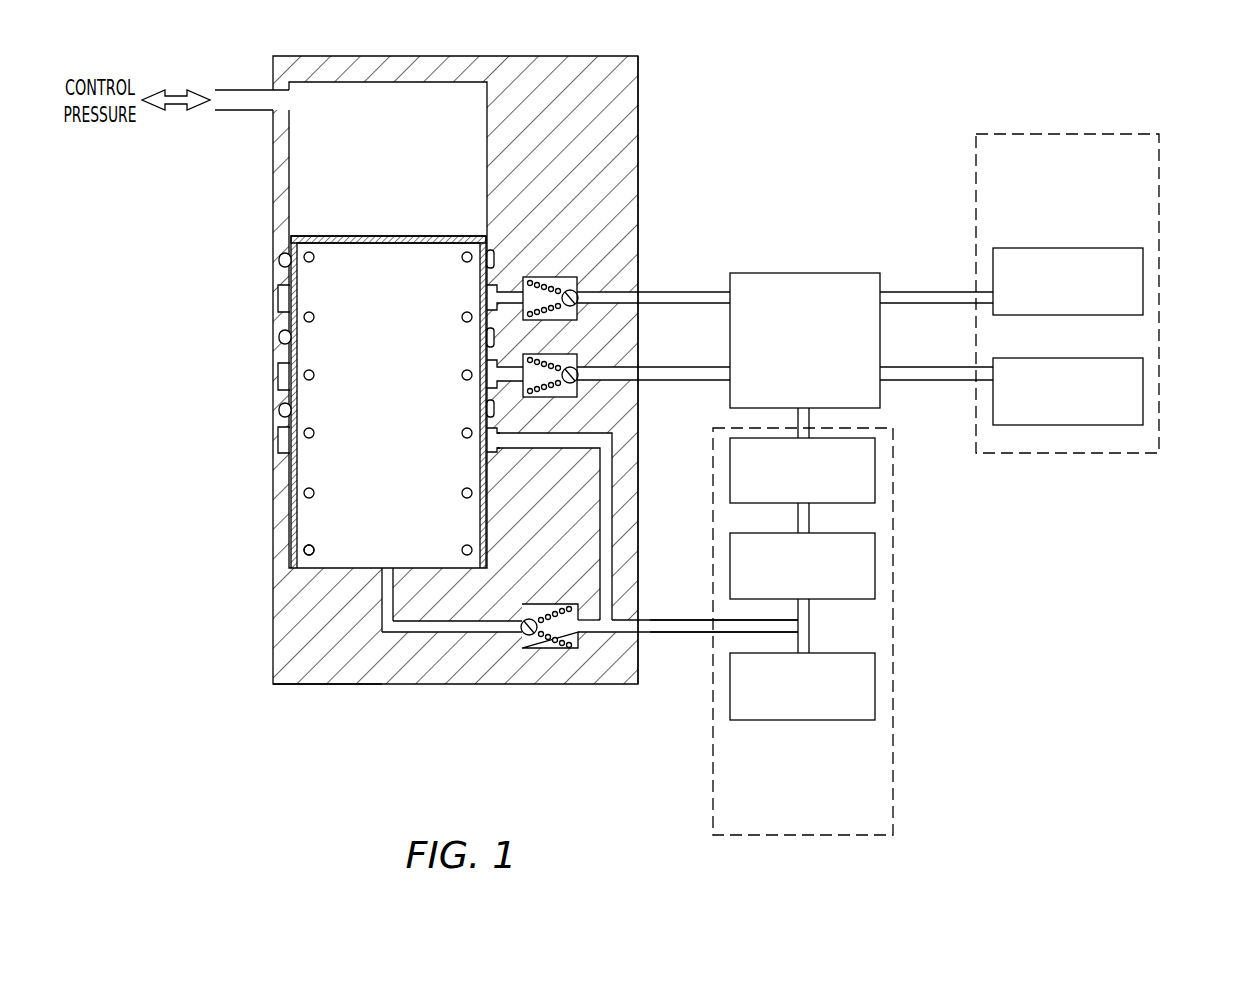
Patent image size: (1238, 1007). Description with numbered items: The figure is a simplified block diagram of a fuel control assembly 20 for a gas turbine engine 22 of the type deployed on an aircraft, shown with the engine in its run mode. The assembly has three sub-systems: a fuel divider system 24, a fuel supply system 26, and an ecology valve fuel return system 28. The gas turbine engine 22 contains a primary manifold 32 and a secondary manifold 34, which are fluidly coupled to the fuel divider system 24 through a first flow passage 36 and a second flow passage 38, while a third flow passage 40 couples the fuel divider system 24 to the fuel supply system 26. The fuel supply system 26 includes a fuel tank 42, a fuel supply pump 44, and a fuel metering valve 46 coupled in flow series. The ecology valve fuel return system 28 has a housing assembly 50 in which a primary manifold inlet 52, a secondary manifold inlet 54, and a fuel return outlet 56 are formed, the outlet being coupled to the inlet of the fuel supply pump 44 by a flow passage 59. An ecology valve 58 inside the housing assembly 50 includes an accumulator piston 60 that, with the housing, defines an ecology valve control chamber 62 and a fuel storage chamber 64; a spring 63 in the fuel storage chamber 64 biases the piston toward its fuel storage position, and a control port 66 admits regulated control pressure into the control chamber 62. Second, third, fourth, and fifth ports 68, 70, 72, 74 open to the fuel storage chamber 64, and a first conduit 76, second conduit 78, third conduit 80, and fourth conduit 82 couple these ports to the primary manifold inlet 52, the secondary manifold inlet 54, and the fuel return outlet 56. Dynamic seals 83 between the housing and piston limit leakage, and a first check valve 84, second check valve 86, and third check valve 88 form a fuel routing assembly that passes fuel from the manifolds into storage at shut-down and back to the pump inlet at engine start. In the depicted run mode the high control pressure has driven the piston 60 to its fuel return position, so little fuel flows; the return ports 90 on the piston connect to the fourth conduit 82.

The fuel control assembly 20 is at (893, 112).
The gas turbine engine 22 is at (1159, 166).
The fuel divider system 24 is at (800, 273).
The fuel supply system 26 is at (893, 777).
The ecology valve fuel return system 28 is at (668, 82).
The primary manifold 32 is at (1143, 281).
The secondary manifold 34 is at (1143, 390).
The first flow passage 36 is at (925, 292).
The second flow passage 38 is at (925, 367).
The third flow passage 40 is at (810, 421).
The fuel tank 42 is at (875, 688).
The fuel supply pump 44 is at (875, 567).
The fuel metering valve 46 is at (875, 470).
The housing assembly 50 is at (385, 56).
The primary manifold inlet 52 is at (645, 292).
The secondary manifold inlet 54 is at (645, 367).
The fuel return outlet 56 is at (645, 620).
The ecology valve 58 is at (305, 593).
The flow passage 59 is at (682, 632).
The accumulator piston 60 is at (385, 236).
The ecology valve control chamber 62 is at (400, 122).
The spring 63 is at (313, 545).
The fuel storage chamber 64 is at (400, 377).
The control port 66 is at (268, 108).
The second port 68 is at (279, 298).
The third port 70 is at (279, 377).
The fourth port 72 is at (279, 440).
The fifth port 74 is at (390, 568).
The first conduit 76 is at (608, 293).
The second conduit 78 is at (608, 367).
The third conduit 80 is at (437, 632).
The fourth conduit 82 is at (546, 448).
The dynamic seals 83 is at (279, 260).
The first check valve 84 is at (548, 277).
The second check valve 86 is at (578, 395).
The third check valve 88 is at (545, 648).
The return ports 90 is at (487, 430).